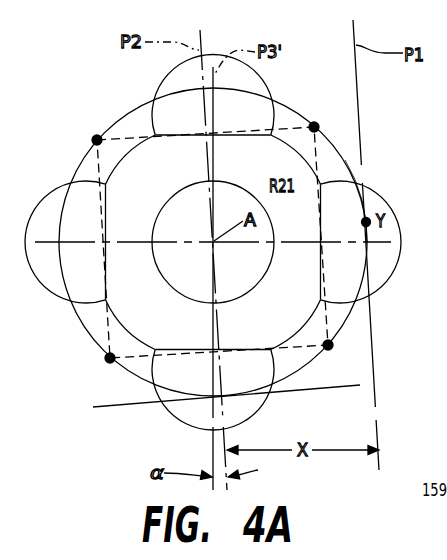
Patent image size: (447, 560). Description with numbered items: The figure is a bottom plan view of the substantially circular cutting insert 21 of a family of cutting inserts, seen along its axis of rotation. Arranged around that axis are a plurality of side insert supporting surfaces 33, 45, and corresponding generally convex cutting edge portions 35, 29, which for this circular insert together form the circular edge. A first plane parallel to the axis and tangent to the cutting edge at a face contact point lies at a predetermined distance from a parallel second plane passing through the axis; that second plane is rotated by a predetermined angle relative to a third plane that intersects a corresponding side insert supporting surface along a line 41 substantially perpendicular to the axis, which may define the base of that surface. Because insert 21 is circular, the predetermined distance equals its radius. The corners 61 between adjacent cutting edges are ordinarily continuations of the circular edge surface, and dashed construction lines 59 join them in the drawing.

The cutting insert 21 is at (277, 80).
The cutting edge portion 29 is at (360, 175).
The side insert supporting surface 33 is at (247, 374).
The cutting edge portion 35 is at (118, 112).
The line 41 is at (107, 200).
The side insert supporting surface 45 is at (90, 270).
The imaginary line 59 is at (99, 163).
The corner 61 is at (97, 140).